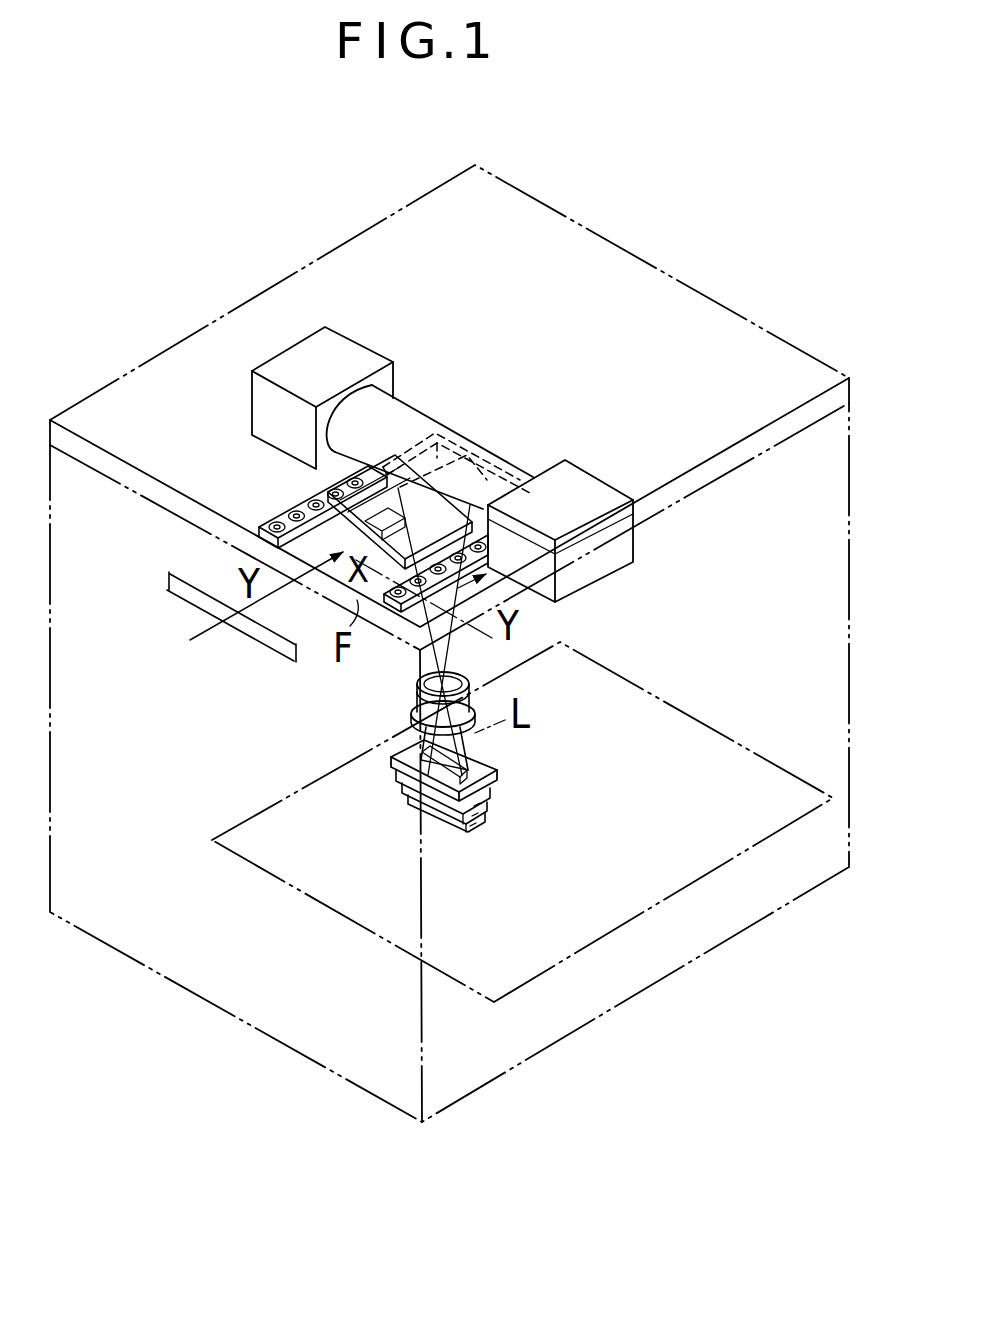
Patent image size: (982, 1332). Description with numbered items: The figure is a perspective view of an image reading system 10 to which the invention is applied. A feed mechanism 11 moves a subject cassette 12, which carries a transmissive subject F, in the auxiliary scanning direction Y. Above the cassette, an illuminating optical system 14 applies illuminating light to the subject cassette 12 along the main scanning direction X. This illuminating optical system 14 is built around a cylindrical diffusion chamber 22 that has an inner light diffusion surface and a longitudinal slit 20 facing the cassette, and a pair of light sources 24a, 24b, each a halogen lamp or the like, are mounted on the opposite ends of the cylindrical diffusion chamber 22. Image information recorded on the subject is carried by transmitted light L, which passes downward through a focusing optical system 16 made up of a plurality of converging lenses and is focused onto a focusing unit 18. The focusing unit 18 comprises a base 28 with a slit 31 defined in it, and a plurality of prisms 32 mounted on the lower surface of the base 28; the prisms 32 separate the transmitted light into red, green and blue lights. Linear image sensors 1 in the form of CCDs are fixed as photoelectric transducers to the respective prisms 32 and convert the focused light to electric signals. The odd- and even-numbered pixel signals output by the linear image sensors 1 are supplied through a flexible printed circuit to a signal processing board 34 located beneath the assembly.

The image reading system 10 is at (670, 203).
The feed mechanism 11 is at (259, 460).
The subject cassette 12 is at (345, 497).
The illuminating optical system 14 is at (453, 435).
The focusing optical system 16 is at (489, 695).
The focusing unit 18 is at (513, 770).
The longitudinal slit 20 is at (497, 452).
The cylindrical diffusion chamber 22 is at (403, 415).
The light source 24a is at (332, 343).
The light source 24b is at (590, 487).
The base 28 is at (392, 754).
The slit 31 is at (448, 773).
The prisms 32 is at (482, 806).
The linear image sensors 1 is at (480, 830).
The signal processing board 34 is at (806, 780).